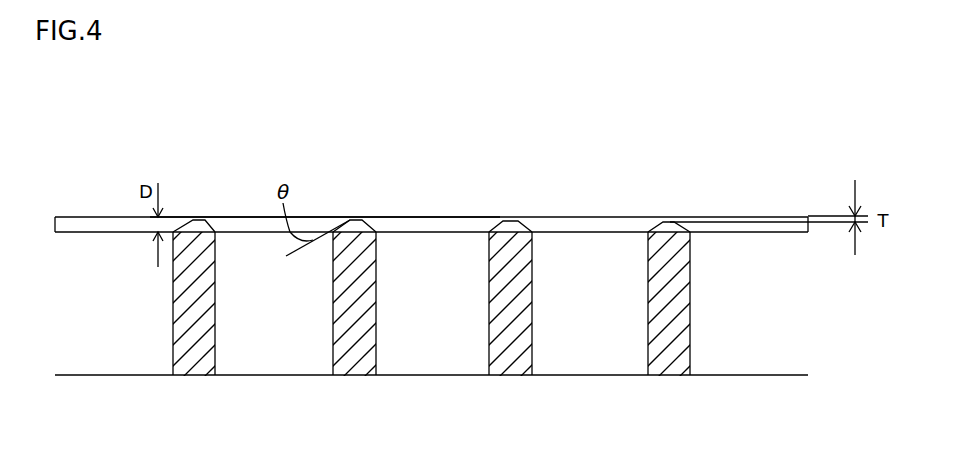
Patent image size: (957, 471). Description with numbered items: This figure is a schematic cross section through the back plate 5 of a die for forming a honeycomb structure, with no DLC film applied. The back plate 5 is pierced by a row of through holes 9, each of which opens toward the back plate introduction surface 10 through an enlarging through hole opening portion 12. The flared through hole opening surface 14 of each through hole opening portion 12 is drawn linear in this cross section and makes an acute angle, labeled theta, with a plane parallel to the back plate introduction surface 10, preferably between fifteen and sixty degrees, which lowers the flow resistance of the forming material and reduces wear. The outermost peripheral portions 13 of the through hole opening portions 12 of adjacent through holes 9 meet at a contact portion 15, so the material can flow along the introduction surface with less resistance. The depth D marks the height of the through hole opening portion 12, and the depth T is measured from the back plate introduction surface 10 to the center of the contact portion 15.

The back plate 5 is at (755, 62).
The through hole 9 is at (287, 358).
The back plate introduction surface 10 is at (699, 216).
The through hole opening portion 12 is at (215, 216).
The outermost peripheral portion 13 is at (503, 222).
The through hole opening surface 14 is at (345, 220).
The contact portion 15 is at (352, 226).